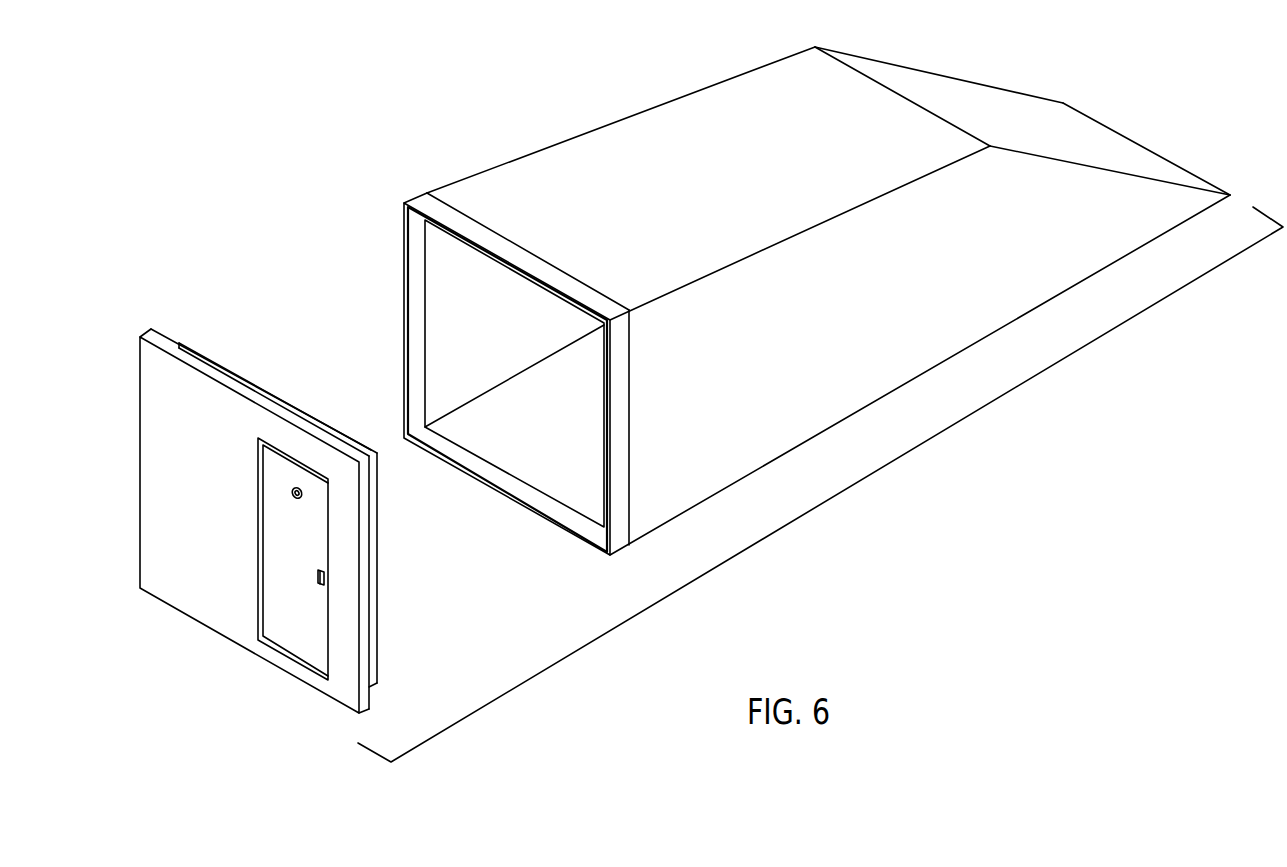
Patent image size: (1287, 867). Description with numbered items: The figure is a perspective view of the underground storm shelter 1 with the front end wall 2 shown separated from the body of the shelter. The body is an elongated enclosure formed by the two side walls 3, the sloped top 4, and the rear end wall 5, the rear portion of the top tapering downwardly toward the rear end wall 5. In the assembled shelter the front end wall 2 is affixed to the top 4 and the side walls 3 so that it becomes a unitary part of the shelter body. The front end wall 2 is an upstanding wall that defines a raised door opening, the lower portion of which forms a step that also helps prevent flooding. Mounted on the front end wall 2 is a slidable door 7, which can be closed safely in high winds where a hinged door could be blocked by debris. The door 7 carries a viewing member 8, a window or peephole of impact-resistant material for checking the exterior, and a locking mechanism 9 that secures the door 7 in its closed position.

The underground storm shelter 1 is at (330, 169).
The front end wall 2 is at (175, 594).
The side walls 3 is at (728, 432).
The sloped top 4 is at (581, 161).
The rear end wall 5 is at (988, 102).
The slidable door 7 is at (305, 641).
The viewing member 8 is at (298, 488).
The locking mechanism 9 is at (325, 579).